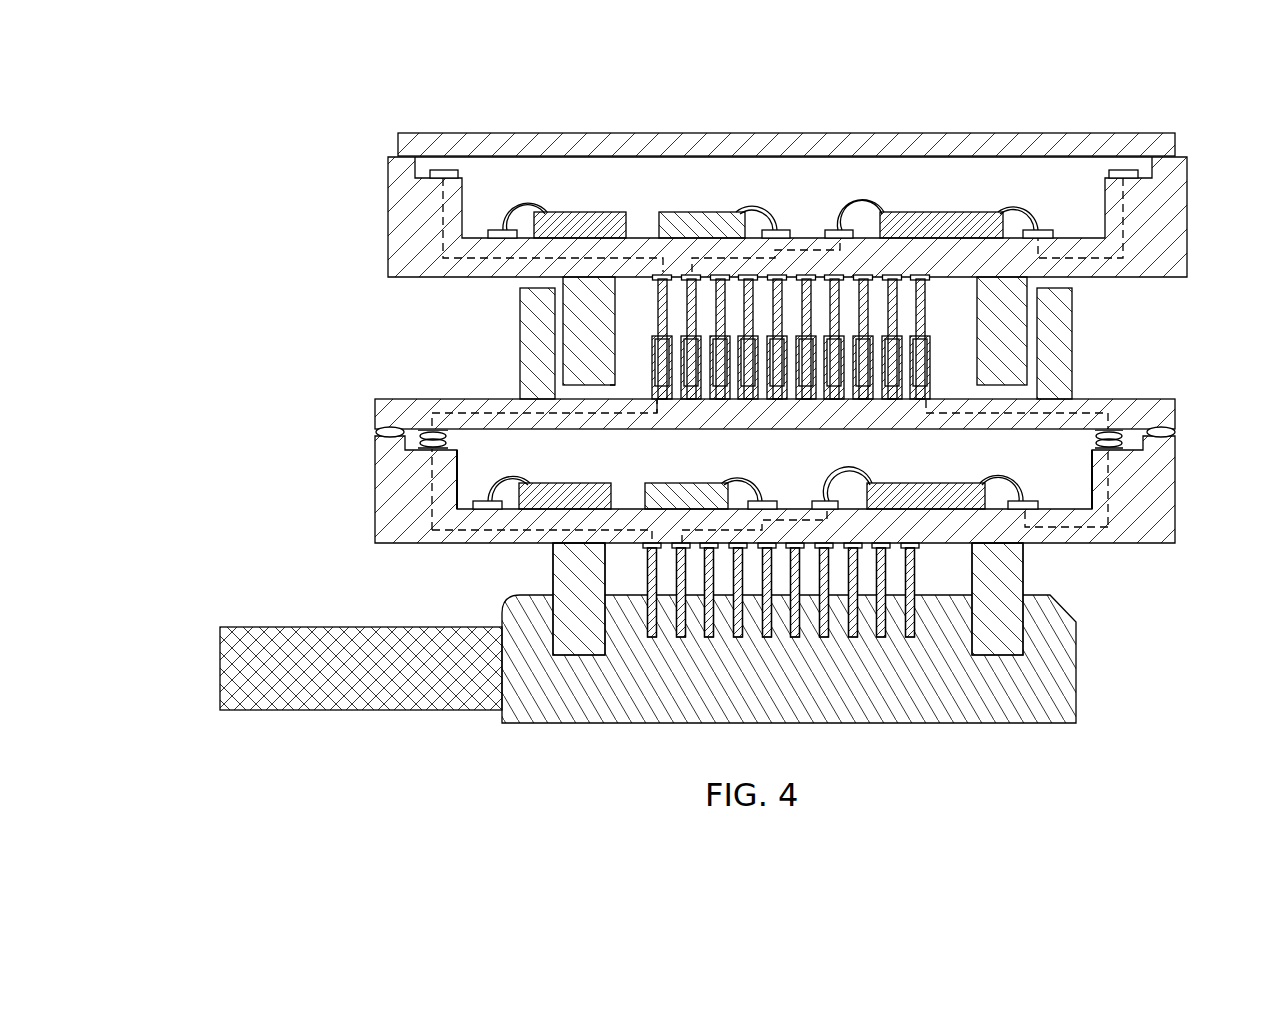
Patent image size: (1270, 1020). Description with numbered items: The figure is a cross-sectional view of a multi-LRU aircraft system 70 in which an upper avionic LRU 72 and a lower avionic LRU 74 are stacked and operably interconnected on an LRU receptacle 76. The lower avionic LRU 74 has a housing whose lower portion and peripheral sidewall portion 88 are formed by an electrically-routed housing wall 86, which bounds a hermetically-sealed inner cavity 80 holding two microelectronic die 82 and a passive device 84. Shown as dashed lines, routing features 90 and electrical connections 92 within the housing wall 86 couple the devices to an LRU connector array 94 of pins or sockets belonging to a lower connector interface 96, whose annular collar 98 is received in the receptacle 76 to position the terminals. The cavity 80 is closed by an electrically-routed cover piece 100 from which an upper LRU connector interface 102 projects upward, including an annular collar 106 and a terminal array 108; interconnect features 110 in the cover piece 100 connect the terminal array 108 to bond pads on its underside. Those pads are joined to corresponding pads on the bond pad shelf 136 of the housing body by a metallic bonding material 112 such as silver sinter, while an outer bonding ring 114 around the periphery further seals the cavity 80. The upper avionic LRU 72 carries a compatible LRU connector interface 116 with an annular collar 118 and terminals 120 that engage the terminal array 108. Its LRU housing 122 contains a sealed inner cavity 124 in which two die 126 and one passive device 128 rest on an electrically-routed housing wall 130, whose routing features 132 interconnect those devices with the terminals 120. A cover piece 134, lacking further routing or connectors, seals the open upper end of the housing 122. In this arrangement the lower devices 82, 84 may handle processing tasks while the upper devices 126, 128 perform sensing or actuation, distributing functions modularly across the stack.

The multi-LRU aircraft system 70 is at (236, 133).
The upper avionic LRU 72 is at (1192, 135).
The lower avionic LRU 74 is at (1192, 725).
The LRU receptacle 76 is at (1069, 685).
The inner cavity 80 is at (840, 456).
The microelectronic die 82 is at (595, 485).
The passive device 84 is at (692, 485).
The electrically-routed housing wall 86 is at (376, 521).
The peripheral sidewall portion 88 is at (374, 482).
The routing features 90 is at (775, 520).
The electrical connections 92 is at (432, 452).
The LRU connector array 94 is at (653, 570).
The lower connector interface 96 is at (554, 576).
The annular collar 98 is at (1022, 580).
The electrically-routed cover piece 100 is at (402, 400).
The upper LRU connector interface 102 is at (520, 355).
The annular collar 106 is at (1068, 340).
The terminal array 108 is at (918, 392).
The interconnect features 110 is at (560, 413).
The metallic bonding material 112 is at (447, 437).
The outer bonding ring 114 is at (1160, 428).
The LRU connector interface 116 is at (612, 384).
The annular collar 118 is at (980, 283).
The terminals 120 is at (663, 283).
The LRU housing 122 is at (389, 221).
The inner cavity 124 is at (834, 190).
The die 126 is at (590, 212).
The passive device 128 is at (700, 212).
The electrically-routed housing wall 130 is at (392, 265).
The routing features 132 is at (448, 200).
The cover piece 134 is at (512, 133).
The bond pad shelf 136 is at (458, 480).